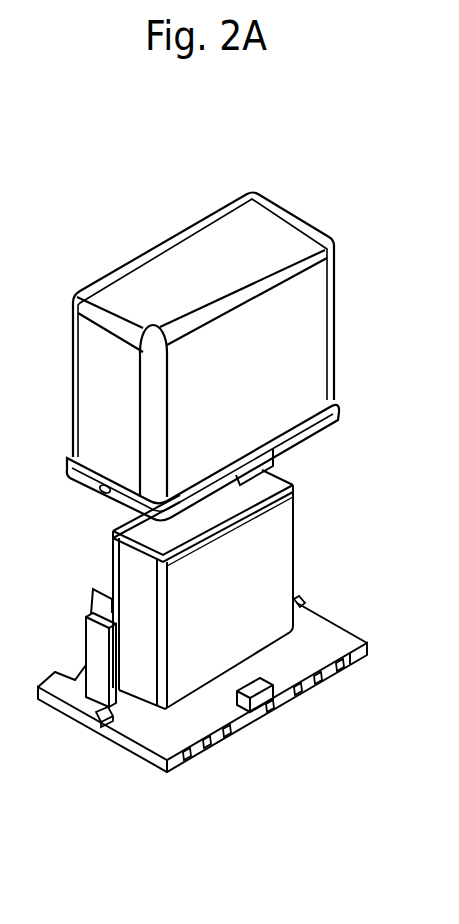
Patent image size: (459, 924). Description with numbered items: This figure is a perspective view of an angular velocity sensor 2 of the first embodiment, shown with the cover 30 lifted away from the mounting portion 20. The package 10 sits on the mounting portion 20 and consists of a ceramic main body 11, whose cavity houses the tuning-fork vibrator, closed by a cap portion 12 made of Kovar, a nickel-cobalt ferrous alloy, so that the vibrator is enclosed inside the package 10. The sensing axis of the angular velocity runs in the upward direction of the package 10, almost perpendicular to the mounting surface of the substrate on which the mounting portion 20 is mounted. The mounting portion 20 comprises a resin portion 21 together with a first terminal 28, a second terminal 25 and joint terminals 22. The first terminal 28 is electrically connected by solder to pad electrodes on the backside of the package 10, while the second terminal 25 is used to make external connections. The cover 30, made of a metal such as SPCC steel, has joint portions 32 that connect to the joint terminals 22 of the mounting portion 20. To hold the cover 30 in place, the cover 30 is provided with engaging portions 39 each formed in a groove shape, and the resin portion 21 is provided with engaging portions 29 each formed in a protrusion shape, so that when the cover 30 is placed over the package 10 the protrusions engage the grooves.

The sensor device 2 is at (453, 633).
The package 10 is at (258, 589).
The main body 11 is at (293, 481).
The cap portion 12 is at (283, 532).
The mounting portion 20 is at (229, 685).
The resin portion 21 is at (148, 738).
The joint terminals 22 is at (271, 703).
The second terminal 25 is at (324, 684).
The first terminal 28 is at (110, 597).
The engaging portions 29 is at (96, 718).
The cover 30 is at (276, 233).
The joint portions 32 is at (273, 449).
The engaging portions 39 is at (105, 492).